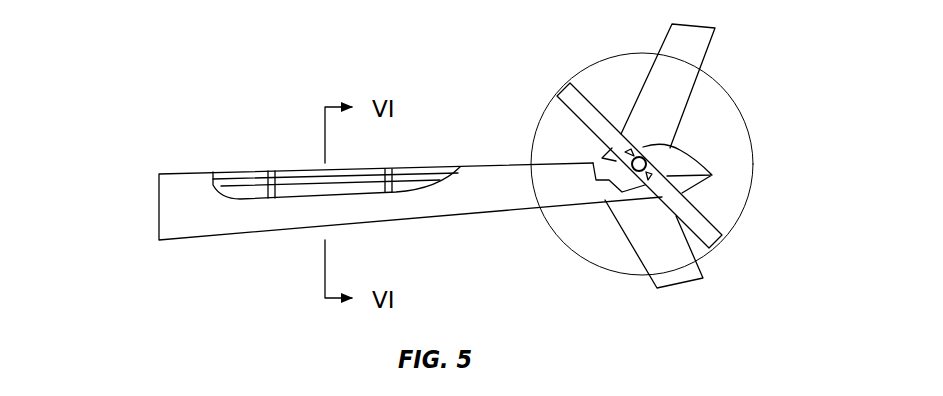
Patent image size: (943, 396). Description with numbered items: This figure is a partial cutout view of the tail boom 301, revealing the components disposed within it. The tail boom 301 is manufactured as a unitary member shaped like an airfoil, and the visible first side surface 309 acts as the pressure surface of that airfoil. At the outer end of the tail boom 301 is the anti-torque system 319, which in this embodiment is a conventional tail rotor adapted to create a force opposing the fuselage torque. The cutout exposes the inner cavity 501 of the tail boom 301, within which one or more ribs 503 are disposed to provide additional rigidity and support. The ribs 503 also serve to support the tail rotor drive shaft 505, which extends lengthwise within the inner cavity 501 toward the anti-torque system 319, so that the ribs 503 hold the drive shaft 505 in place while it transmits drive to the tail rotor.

The tail boom 301 is at (170, 108).
The first side surface 309 is at (208, 218).
The anti-torque system 319 is at (768, 218).
The inner cavity 501 is at (287, 201).
The ribs 503 is at (406, 167).
The tail rotor drive shaft 505 is at (414, 180).